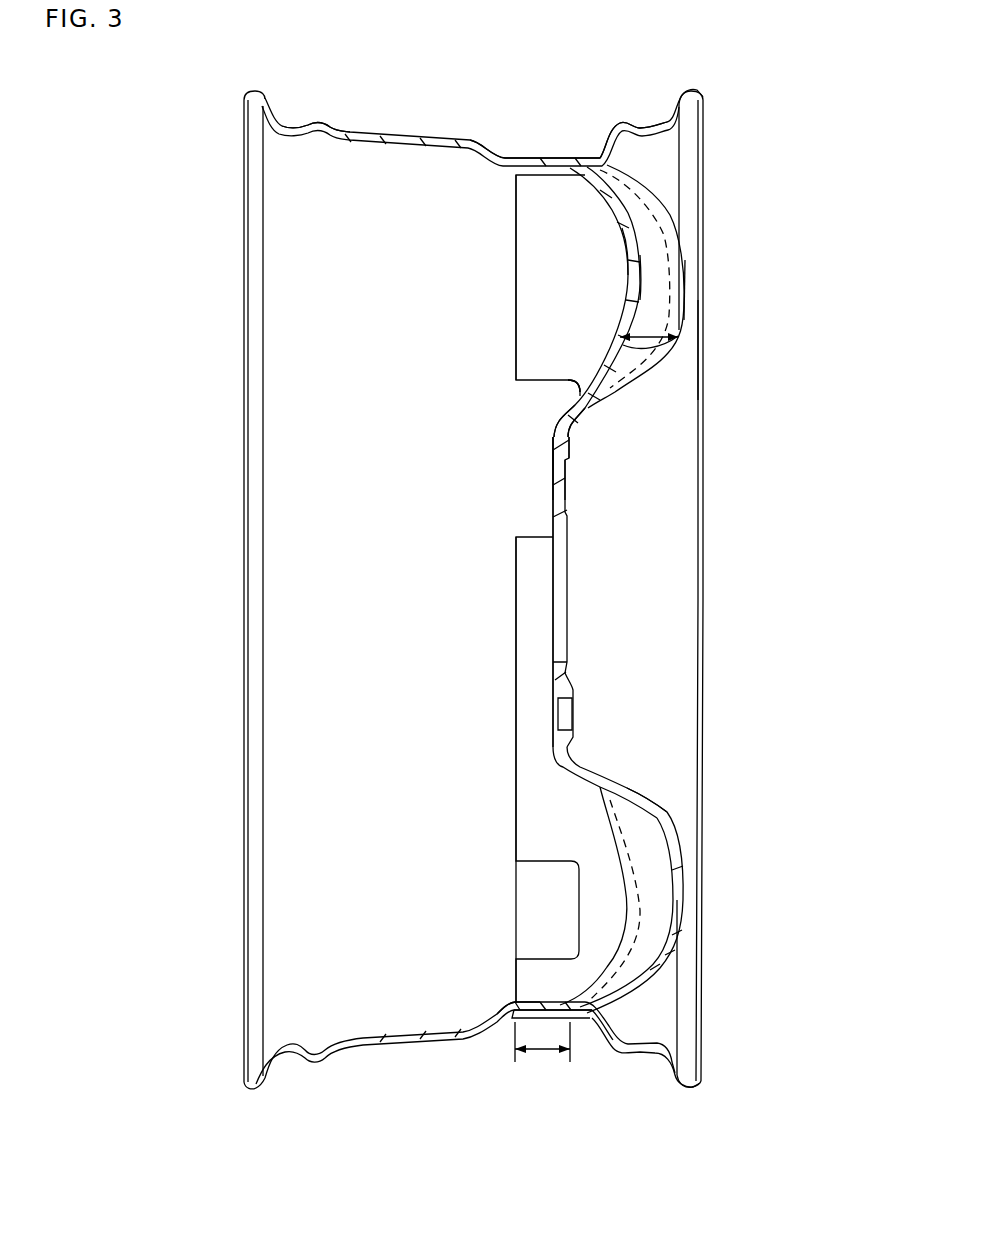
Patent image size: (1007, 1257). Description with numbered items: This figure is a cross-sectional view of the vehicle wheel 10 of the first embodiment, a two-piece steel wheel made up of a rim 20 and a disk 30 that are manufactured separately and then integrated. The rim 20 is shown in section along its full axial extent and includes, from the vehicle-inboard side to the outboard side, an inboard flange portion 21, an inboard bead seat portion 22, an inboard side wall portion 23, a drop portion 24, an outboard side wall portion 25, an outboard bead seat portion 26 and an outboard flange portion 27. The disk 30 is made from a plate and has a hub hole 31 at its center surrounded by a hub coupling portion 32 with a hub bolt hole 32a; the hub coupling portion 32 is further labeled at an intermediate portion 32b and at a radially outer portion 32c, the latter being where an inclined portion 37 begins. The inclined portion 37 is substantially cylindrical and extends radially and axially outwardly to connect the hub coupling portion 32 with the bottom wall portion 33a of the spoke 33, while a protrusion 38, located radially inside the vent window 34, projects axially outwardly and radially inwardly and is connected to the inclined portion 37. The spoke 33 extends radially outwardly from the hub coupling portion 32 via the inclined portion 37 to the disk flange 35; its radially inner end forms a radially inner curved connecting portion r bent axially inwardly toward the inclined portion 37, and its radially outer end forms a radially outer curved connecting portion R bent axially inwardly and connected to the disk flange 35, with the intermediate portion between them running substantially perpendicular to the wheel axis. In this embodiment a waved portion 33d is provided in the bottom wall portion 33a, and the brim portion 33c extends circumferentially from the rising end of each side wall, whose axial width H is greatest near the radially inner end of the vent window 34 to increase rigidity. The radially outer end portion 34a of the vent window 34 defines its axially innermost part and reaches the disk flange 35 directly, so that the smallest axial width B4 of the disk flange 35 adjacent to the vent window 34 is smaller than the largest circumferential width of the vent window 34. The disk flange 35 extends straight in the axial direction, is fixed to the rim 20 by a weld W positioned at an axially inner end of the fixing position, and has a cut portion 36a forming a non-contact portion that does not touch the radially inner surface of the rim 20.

The vehicle wheel 10 is at (724, 356).
The rim 20 is at (391, 114).
The inboard flange portion 21 is at (250, 90).
The inboard bead seat portion 22 is at (294, 125).
The inboard side wall portion 23 is at (488, 144).
The drop portion 24 is at (540, 157).
The outboard side wall portion 25 is at (608, 136).
The outboard bead seat portion 26 is at (643, 122).
The outboard flange portion 27 is at (690, 88).
The disk 30 is at (660, 793).
The hub hole 31 is at (567, 535).
The hub coupling portion 32 is at (558, 497).
The hub bolt hole 32a is at (575, 708).
The cylindrical portion section 32b is at (569, 458).
The radially outer portion of the hub coupling portion 32c is at (570, 425).
The spoke 33 is at (645, 177).
The bottom wall portion 33a is at (634, 248).
The brim portion 33c is at (684, 283).
The waved portion 33d is at (641, 262).
The vent window 34 is at (677, 900).
The radially outer end portion of the vent window 34a is at (592, 1020).
The disk flange 35 is at (538, 1001).
The cut portion 36a is at (583, 178).
The inclined portion 37 is at (582, 407).
The protrusion 38 is at (615, 782).
The radially outer curved connecting portion R is at (585, 185).
The radially inner curved connecting portion r is at (577, 390).
The axial width of the side wall portion H is at (620, 338).
The weld W is at (512, 1010).
The axial width of the disk flange adjacent to the vent window B4 is at (550, 1062).